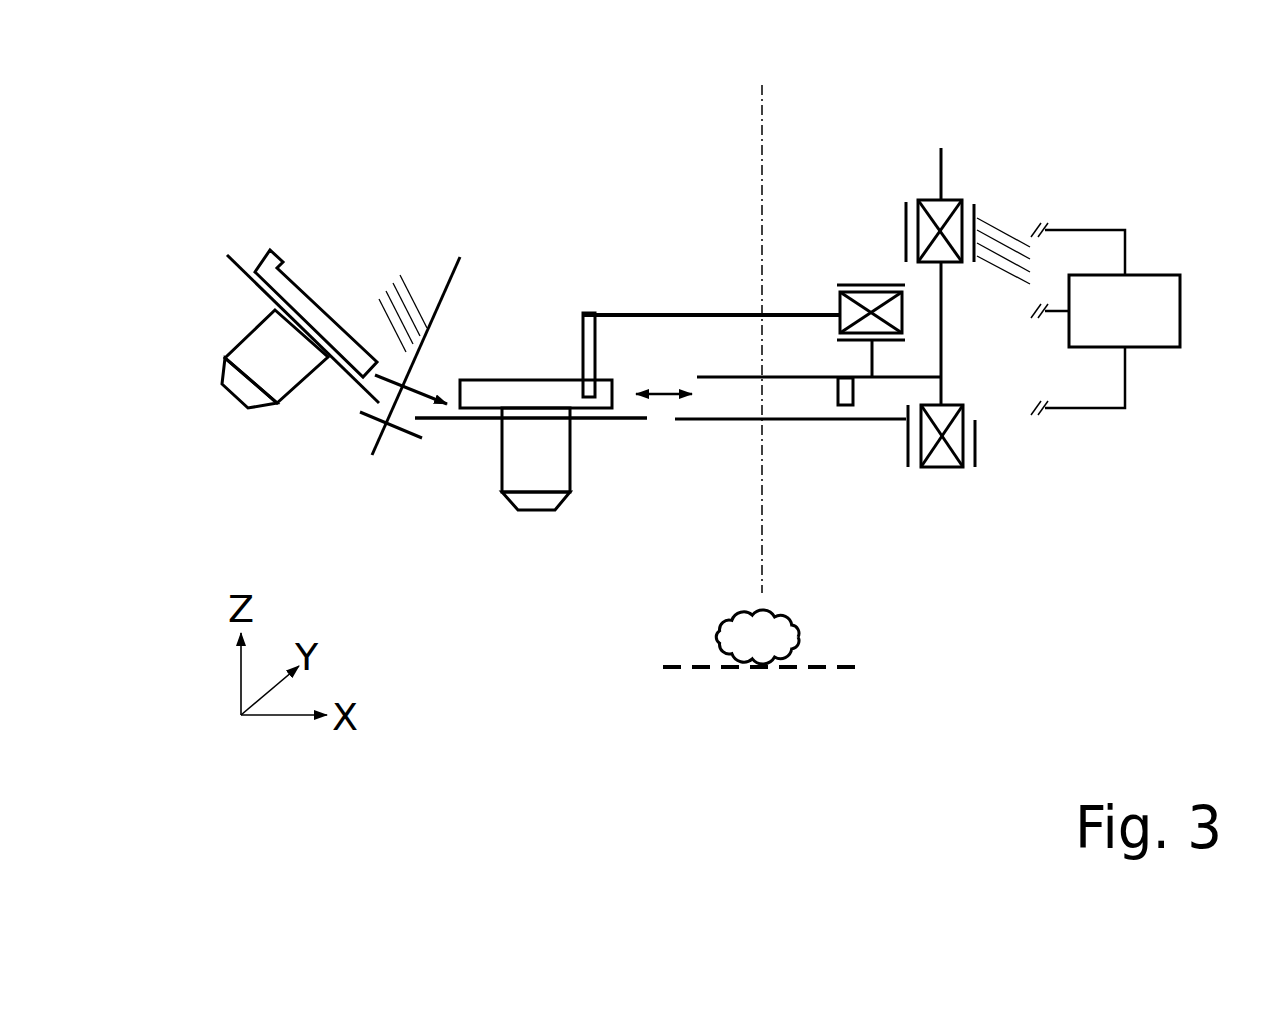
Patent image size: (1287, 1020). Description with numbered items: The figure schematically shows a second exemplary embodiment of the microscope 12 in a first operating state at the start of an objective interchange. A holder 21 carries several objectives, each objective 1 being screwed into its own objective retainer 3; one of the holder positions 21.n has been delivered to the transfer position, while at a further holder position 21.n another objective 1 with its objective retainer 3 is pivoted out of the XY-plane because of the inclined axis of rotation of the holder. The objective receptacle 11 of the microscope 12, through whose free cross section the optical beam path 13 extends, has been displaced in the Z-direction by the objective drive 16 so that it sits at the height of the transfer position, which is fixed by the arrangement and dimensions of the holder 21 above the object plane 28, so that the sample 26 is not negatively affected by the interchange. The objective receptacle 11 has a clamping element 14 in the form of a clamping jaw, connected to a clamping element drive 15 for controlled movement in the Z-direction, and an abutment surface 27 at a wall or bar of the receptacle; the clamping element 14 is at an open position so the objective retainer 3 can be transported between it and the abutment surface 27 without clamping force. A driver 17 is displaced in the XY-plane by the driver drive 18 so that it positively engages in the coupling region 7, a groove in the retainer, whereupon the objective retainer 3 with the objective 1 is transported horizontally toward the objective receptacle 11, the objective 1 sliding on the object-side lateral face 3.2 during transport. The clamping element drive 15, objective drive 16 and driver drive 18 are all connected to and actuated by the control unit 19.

The objective 1 is at (265, 345).
The objective retainer 3 is at (523, 398).
The object-side lateral face 3.2 is at (483, 415).
The coupling region 7 is at (281, 262).
The objective receptacle 11 is at (804, 404).
The microscope 12 is at (1070, 148).
The optical beam path 13 is at (762, 142).
The clamping element 14 is at (877, 421).
The clamping element drive 15 is at (943, 458).
The objective drive 16 is at (945, 208).
The driver 17 is at (685, 313).
The driver drive 18 is at (875, 292).
The control unit 19 is at (1147, 337).
The holder 21 is at (443, 250).
The holder position 21.n is at (384, 403).
The sample 26 is at (763, 638).
The abutment surface 27 is at (721, 389).
The object plane 28 is at (680, 662).